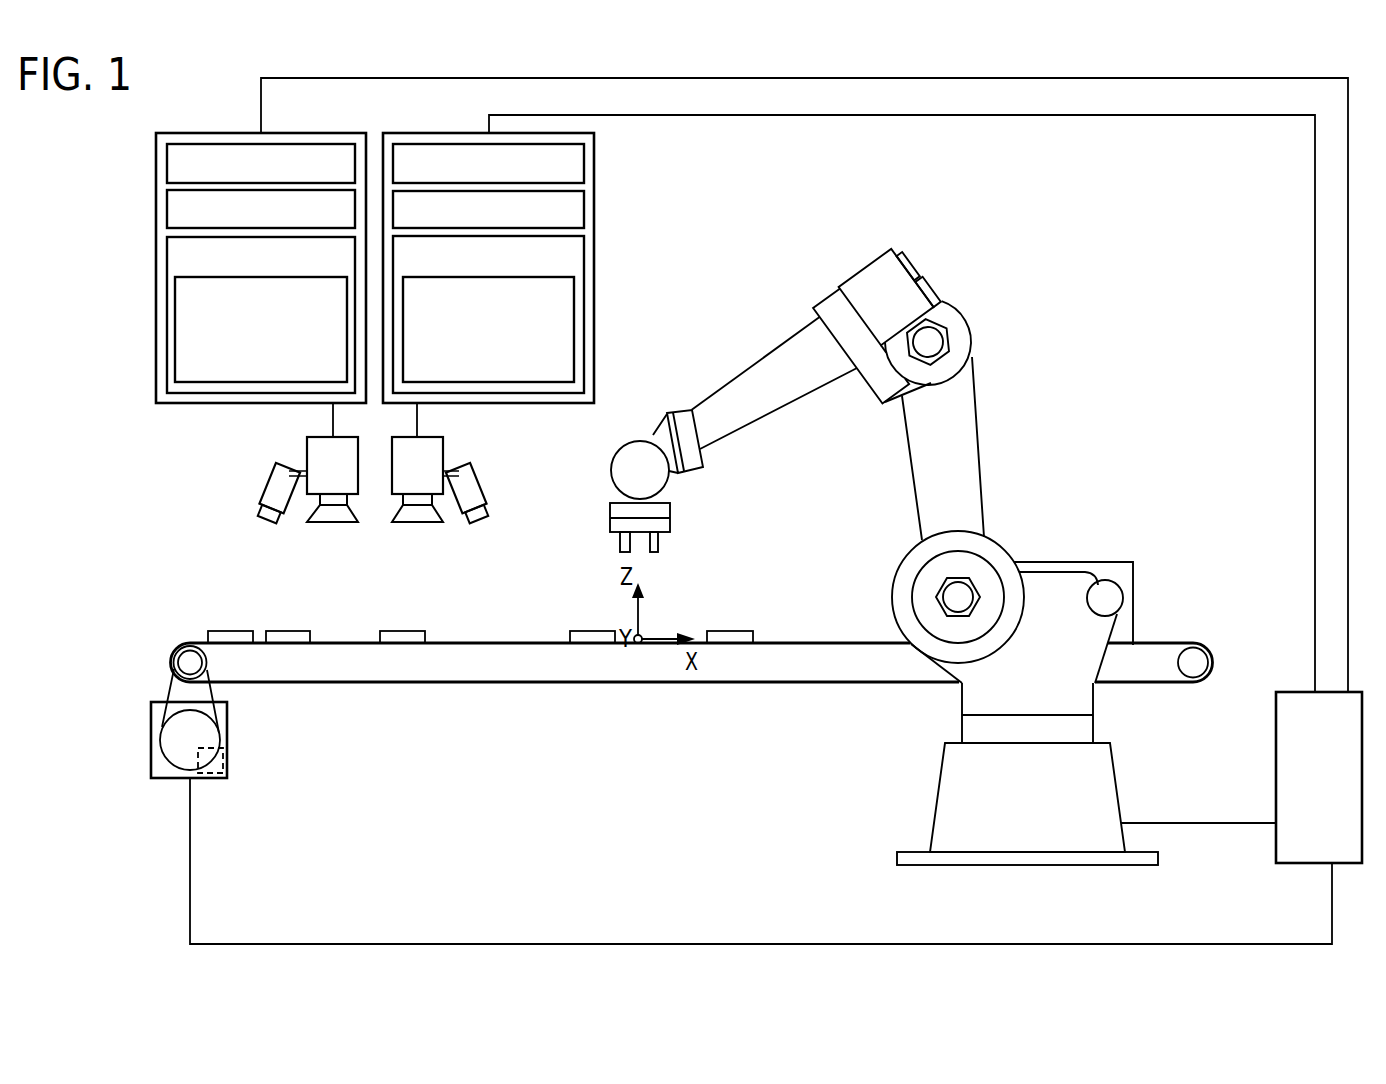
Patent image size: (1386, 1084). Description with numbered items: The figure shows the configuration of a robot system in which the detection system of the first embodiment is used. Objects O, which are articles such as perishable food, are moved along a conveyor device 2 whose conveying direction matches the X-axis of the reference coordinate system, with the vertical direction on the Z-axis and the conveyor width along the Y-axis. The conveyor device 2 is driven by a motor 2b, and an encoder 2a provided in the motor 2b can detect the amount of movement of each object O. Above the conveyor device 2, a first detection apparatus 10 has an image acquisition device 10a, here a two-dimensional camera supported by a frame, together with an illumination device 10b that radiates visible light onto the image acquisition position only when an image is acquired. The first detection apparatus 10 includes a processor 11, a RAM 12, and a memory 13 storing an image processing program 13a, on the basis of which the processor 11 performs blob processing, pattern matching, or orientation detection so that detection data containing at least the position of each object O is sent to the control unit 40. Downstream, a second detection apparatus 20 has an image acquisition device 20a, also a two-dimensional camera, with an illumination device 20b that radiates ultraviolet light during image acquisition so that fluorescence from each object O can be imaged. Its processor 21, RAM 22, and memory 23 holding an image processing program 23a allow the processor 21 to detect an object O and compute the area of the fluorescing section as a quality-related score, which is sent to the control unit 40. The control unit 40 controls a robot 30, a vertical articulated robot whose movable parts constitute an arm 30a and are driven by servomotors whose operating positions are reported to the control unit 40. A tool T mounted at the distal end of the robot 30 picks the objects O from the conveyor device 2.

The conveyor device 2 is at (387, 685).
The encoder 2a is at (223, 760).
The motor 2b is at (229, 717).
The first detection apparatus 10 is at (172, 513).
The image acquisition device 10a is at (307, 450).
The illumination device 10b is at (270, 508).
The processor 11 is at (167, 160).
The RAM 12 is at (167, 207).
The memory 13 is at (167, 262).
The image processing program 13a is at (175, 351).
The second detection apparatus 20 is at (530, 493).
The image acquisition device 20a is at (445, 448).
The illumination device 20b is at (480, 508).
The processor 21 is at (584, 163).
The RAM 22 is at (584, 210).
The memory 23 is at (584, 258).
The image processing program 23a is at (574, 330).
The robot 30 is at (923, 551).
The arm 30a is at (980, 456).
The control unit 40 is at (1276, 755).
The tool T is at (662, 543).
The object O is at (222, 631).